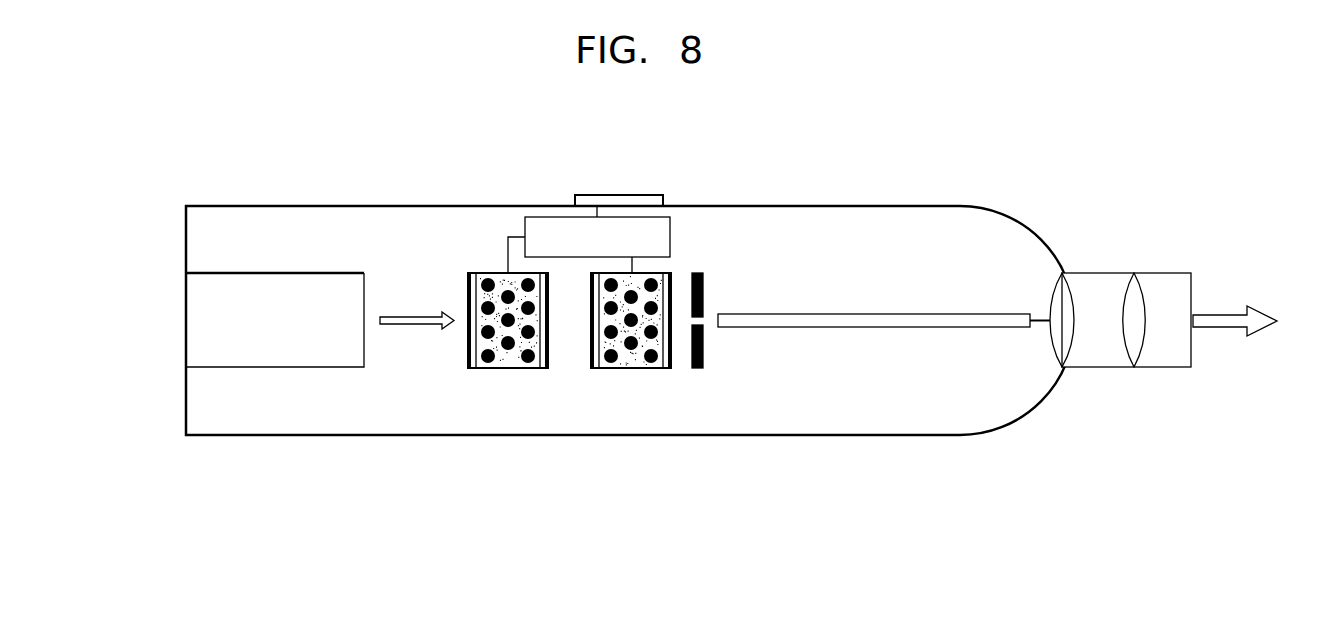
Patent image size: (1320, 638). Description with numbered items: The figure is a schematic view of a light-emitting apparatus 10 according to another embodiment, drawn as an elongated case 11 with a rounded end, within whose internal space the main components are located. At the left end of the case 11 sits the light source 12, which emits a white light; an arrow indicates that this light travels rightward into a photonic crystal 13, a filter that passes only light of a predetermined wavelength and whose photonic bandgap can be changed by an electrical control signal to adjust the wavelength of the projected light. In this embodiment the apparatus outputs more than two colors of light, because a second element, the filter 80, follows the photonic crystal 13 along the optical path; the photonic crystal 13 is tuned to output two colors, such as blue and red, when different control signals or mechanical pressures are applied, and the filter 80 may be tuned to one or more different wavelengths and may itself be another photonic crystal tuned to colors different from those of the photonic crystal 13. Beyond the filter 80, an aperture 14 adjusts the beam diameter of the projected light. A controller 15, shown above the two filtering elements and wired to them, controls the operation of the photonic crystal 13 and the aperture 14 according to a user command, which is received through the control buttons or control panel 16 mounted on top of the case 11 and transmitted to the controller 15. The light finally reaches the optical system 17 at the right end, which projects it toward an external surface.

The light-emitting apparatus 10 is at (630, 364).
The case 11 is at (236, 437).
The light source 12 is at (197, 328).
The photonic crystal 13 is at (528, 370).
The aperture 14 is at (697, 372).
The controller 15 is at (540, 217).
The control panel 16 is at (643, 195).
The optical system 17 is at (1127, 302).
The filter 80 is at (634, 370).